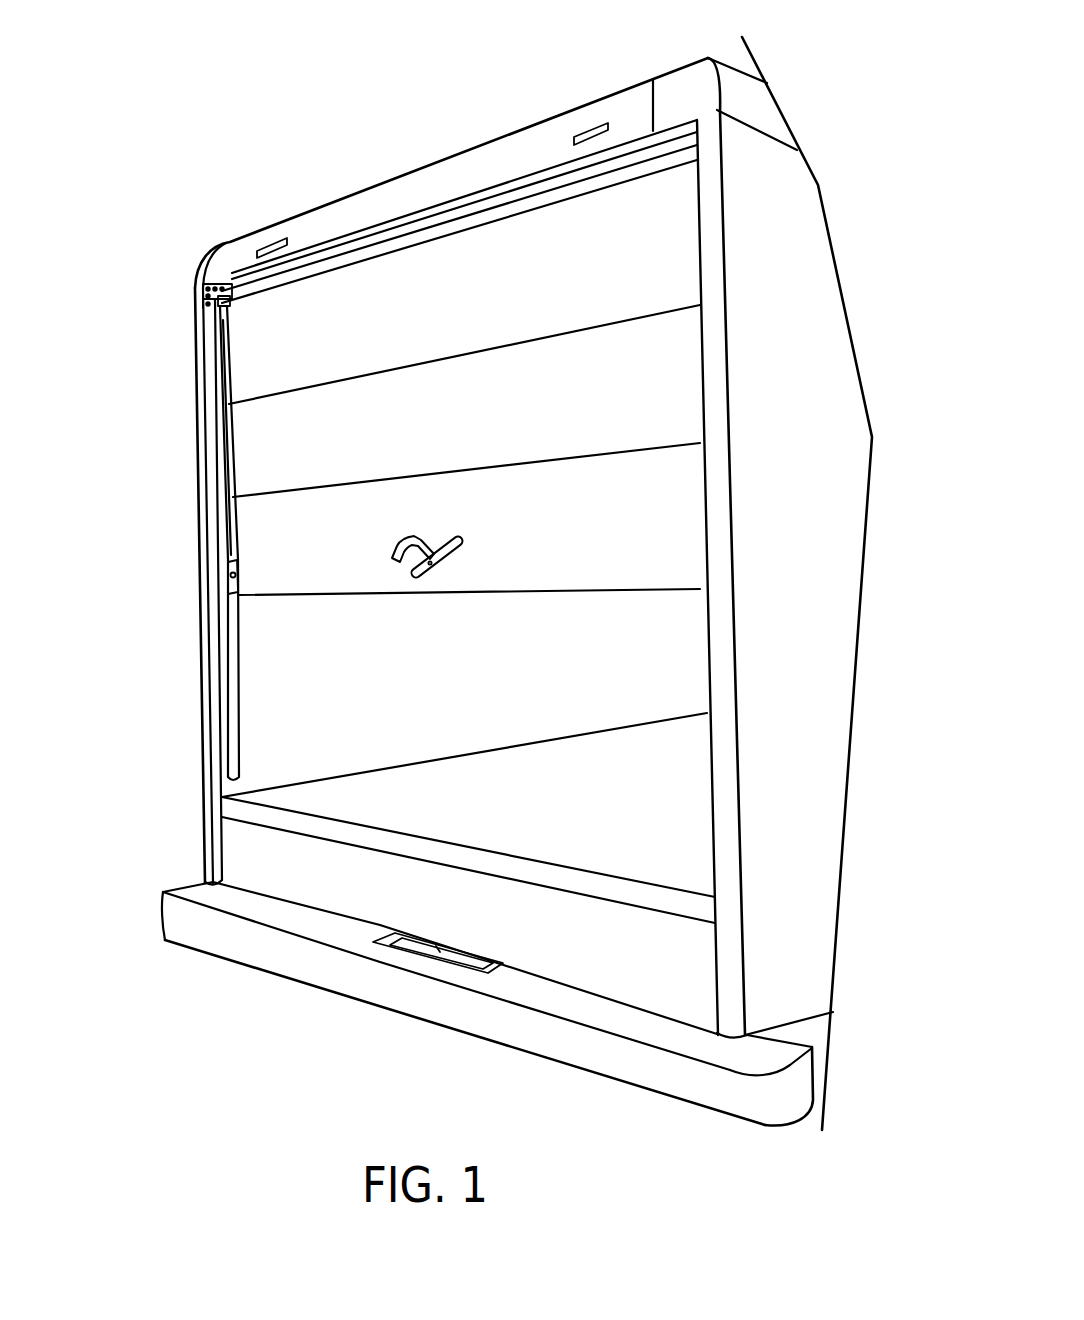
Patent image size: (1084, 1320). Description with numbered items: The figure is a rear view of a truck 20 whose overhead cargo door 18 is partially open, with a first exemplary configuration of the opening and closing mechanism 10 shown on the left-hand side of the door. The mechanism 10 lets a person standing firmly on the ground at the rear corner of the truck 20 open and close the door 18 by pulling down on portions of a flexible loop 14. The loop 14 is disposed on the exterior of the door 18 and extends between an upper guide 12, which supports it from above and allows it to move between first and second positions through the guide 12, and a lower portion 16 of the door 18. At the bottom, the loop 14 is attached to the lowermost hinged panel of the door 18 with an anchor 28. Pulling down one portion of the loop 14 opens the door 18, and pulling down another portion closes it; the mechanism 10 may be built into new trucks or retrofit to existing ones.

The opening and closing mechanism 10 is at (243, 362).
The upper guide 12 is at (207, 306).
The flexible loop 14 is at (227, 455).
The lower portion of door 16 is at (369, 583).
The overhead cargo door 18 is at (654, 356).
The truck 20 is at (748, 194).
The anchor 28 is at (240, 570).